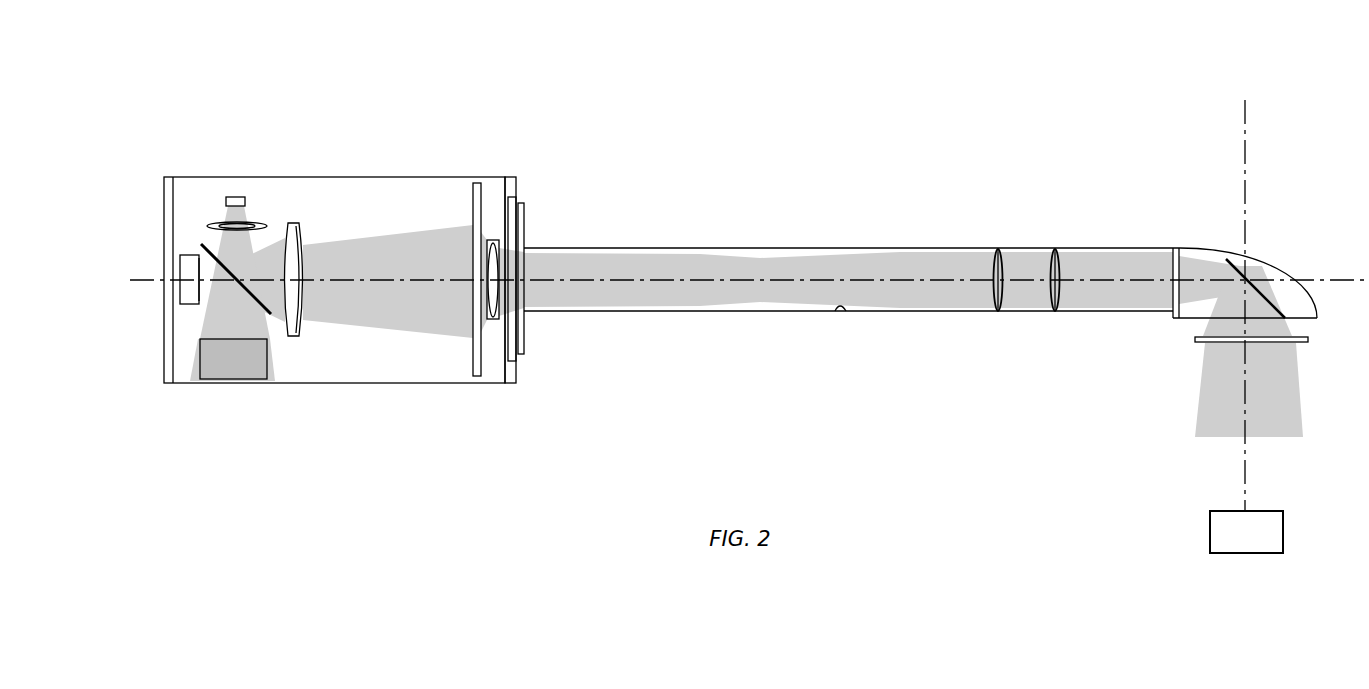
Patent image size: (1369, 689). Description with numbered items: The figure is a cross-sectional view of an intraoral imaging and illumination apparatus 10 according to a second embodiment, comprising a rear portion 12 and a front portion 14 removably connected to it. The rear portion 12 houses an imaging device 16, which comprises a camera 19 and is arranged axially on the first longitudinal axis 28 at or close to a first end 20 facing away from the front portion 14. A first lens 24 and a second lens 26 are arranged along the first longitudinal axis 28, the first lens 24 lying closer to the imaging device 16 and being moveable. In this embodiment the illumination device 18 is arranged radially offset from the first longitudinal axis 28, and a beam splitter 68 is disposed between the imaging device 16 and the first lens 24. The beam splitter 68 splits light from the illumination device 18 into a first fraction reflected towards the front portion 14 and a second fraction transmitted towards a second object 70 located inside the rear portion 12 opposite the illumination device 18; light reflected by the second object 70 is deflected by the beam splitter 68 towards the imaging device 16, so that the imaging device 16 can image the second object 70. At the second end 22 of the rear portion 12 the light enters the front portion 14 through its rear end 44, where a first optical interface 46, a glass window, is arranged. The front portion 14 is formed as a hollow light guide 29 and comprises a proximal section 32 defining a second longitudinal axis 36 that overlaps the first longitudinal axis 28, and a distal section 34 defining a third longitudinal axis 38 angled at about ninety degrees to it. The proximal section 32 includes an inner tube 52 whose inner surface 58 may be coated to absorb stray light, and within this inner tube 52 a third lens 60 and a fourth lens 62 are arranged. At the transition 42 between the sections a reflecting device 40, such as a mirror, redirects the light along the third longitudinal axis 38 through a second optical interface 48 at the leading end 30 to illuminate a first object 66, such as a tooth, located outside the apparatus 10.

The intraoral imaging and illumination apparatus 10 is at (258, 78).
The rear portion 12 is at (384, 177).
The front portion 14 is at (1093, 223).
The imaging device 16 is at (178, 272).
The illumination device 18 is at (229, 195).
The camera 19 is at (200, 282).
The first end 20 is at (165, 347).
The second end 22 is at (488, 188).
The first lens 24 is at (292, 222).
The second lens 26 is at (490, 265).
The first longitudinal axis 28 is at (358, 275).
The light guide 29 is at (714, 215).
The leading end 30 is at (1312, 320).
The proximal section 32 is at (633, 222).
The distal section 34 is at (1267, 240).
The second longitudinal axis 36 is at (847, 267).
The third longitudinal axis 38 is at (1247, 490).
The reflecting device 40 is at (1247, 277).
The transition 42 is at (1234, 257).
The rear end 44 is at (518, 360).
The first optical interface 46 is at (525, 343).
The second optical interface 48 is at (1203, 343).
The inner tube 52 is at (756, 313).
The inner surface 58 is at (846, 311).
The third lens 60 is at (998, 315).
The fourth lens 62 is at (1055, 315).
The first object 66 is at (1283, 533).
The beam splitter 68 is at (238, 278).
The second object 70 is at (250, 383).